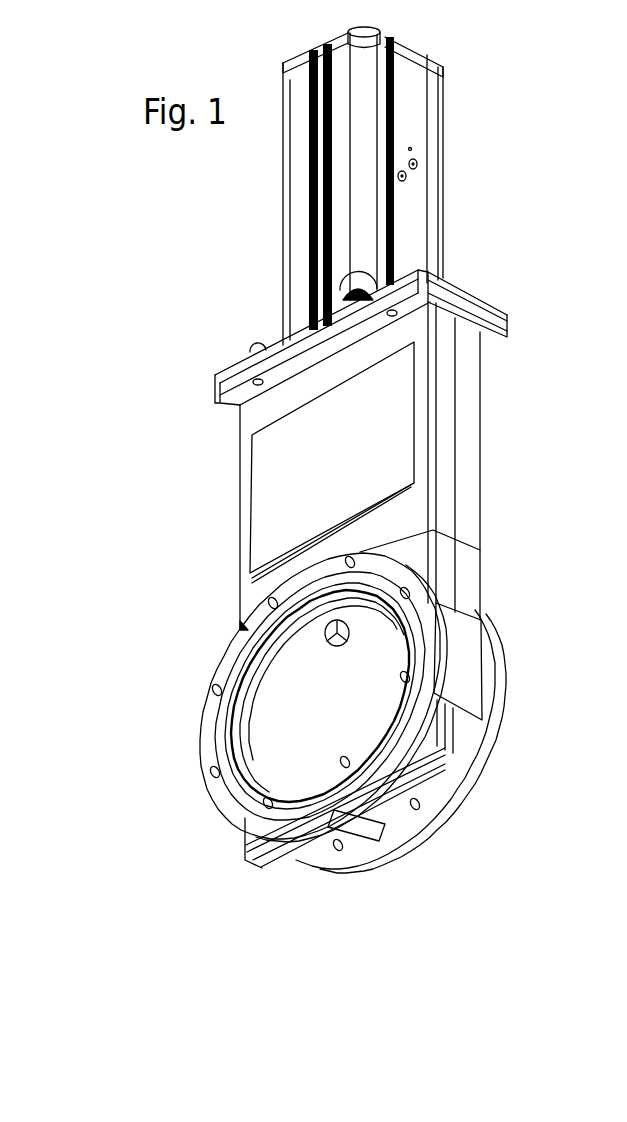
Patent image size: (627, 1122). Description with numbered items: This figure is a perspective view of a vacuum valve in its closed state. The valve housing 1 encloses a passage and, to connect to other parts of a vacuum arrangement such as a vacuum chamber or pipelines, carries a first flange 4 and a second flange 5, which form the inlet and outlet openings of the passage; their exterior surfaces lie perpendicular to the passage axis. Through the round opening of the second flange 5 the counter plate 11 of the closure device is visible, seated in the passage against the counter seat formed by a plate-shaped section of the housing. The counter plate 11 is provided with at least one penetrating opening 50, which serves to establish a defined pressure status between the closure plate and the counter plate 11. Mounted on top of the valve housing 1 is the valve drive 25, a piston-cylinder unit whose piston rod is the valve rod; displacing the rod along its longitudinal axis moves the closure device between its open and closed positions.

The valve housing 1 is at (497, 598).
The first flange 4 is at (472, 768).
The second flange 5 is at (208, 727).
The counter plate 11 is at (297, 680).
The valve drive 25 is at (460, 180).
The penetrating opening 50 is at (349, 628).